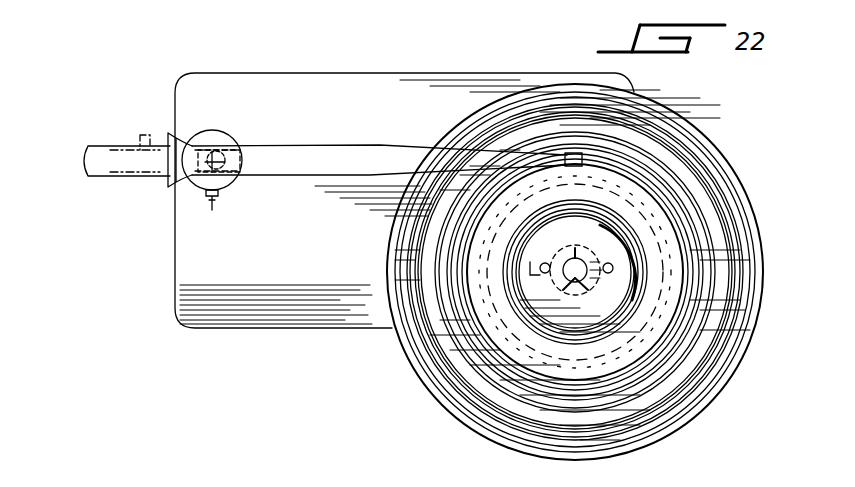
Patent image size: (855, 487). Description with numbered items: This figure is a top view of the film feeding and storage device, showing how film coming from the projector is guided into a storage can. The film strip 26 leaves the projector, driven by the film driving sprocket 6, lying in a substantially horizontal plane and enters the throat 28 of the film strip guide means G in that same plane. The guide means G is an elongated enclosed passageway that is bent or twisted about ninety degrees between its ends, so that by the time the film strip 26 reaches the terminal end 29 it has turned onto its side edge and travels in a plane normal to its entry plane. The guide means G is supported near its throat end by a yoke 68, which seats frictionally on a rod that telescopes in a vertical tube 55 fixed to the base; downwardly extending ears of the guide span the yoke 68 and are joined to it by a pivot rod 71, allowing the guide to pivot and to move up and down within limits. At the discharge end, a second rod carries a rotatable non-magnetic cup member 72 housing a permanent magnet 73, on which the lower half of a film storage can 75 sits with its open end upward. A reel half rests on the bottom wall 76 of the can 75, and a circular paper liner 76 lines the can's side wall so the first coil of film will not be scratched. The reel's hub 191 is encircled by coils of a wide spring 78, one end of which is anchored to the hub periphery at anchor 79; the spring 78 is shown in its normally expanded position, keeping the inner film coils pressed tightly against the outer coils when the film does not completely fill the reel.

The film strip 26 is at (96, 150).
The film driving sprocket 6 is at (143, 134).
The throat 28 is at (184, 148).
The film strip guide means G is at (350, 142).
The tube 55 is at (228, 140).
The pivot rod 71 is at (196, 186).
The yoke 68 is at (244, 180).
The film storage can 75 is at (756, 330).
The bottom wall / paper liner 76 is at (752, 292).
The cup member 72 is at (426, 387).
The permanent magnet 73 is at (402, 344).
The terminal end 29 is at (558, 158).
The wide spring 78 is at (646, 259).
The hub 191 is at (612, 236).
The spring anchor 79 is at (530, 268).